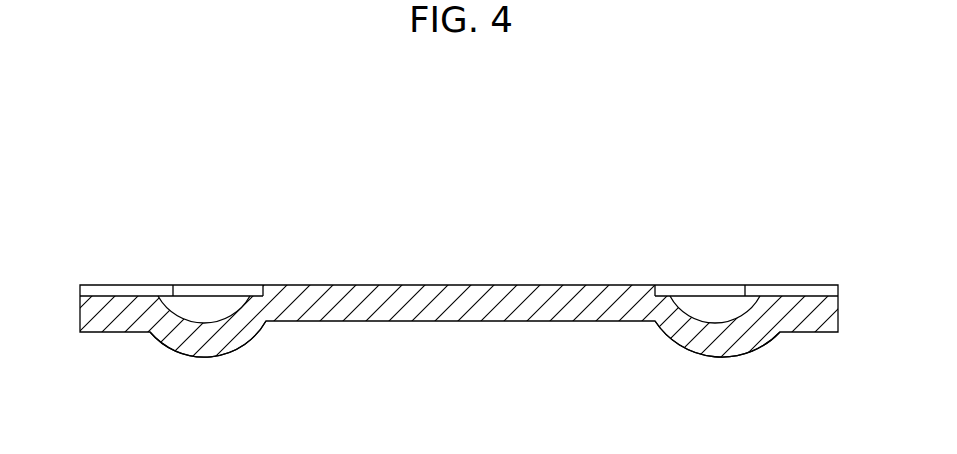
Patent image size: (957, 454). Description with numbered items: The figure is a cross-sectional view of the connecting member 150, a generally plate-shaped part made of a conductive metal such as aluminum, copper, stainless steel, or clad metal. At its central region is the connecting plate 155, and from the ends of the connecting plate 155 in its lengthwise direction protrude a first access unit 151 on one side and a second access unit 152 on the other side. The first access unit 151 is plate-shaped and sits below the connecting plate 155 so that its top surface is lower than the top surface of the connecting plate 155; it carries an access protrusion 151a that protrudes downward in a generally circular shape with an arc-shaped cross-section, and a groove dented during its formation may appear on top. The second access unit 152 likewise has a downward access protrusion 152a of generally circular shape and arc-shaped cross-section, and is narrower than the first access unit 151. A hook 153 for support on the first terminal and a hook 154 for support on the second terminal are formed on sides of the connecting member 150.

The connecting member 150 is at (353, 262).
The first access unit 151 is at (127, 328).
The access protrusion 151a is at (200, 353).
The second access unit 152 is at (793, 334).
The access protrusion 152a is at (718, 355).
The hook 153 is at (220, 290).
The hook 154 is at (792, 290).
The connecting plate 155 is at (437, 290).